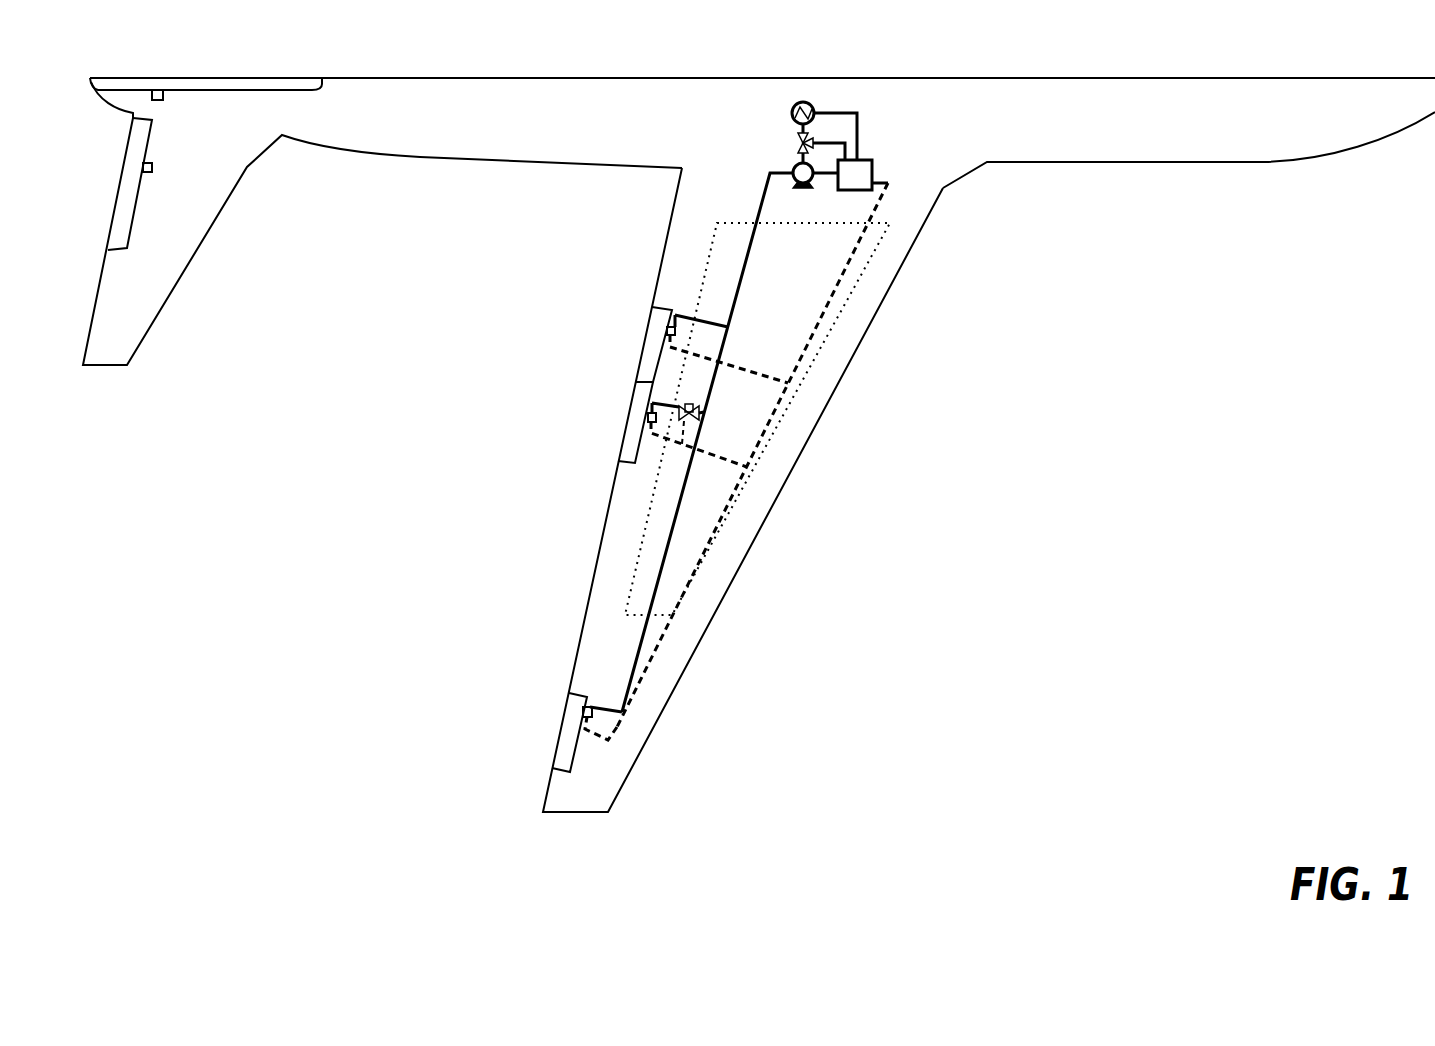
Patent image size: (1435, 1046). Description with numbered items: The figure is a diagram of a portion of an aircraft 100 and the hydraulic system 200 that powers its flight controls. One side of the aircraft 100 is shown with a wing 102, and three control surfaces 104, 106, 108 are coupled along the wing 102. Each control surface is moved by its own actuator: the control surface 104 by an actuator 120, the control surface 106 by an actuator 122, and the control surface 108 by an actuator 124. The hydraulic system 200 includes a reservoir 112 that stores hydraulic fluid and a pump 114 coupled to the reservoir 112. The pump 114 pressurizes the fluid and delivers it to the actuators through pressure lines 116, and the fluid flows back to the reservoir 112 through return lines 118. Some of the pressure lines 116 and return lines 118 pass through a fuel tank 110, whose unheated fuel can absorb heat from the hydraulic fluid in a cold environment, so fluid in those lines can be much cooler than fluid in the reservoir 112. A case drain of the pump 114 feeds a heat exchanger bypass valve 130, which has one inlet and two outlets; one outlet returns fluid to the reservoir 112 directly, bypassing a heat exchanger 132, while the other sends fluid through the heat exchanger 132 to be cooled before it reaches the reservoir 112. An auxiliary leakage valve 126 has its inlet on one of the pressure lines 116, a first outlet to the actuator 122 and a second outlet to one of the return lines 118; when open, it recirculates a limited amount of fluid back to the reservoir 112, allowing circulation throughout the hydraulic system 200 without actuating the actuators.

The aircraft 100 is at (160, 384).
The wing 102 is at (712, 622).
The control surface 104 is at (655, 313).
The control surface 106 is at (643, 397).
The control surface 108 is at (565, 730).
The fuel tank 110 is at (880, 247).
The reservoir 112 is at (873, 173).
The pump 114 is at (793, 182).
The pressure lines 116 is at (741, 278).
The return lines 118 is at (828, 307).
The actuator 120 is at (662, 328).
The actuator 122 is at (643, 418).
The actuator 124 is at (583, 700).
The auxiliary leakage valve 126 is at (697, 410).
The heat exchanger bypass valve 130 is at (795, 143).
The heat exchanger 132 is at (853, 47).
The hydraulic system 200 is at (880, 509).